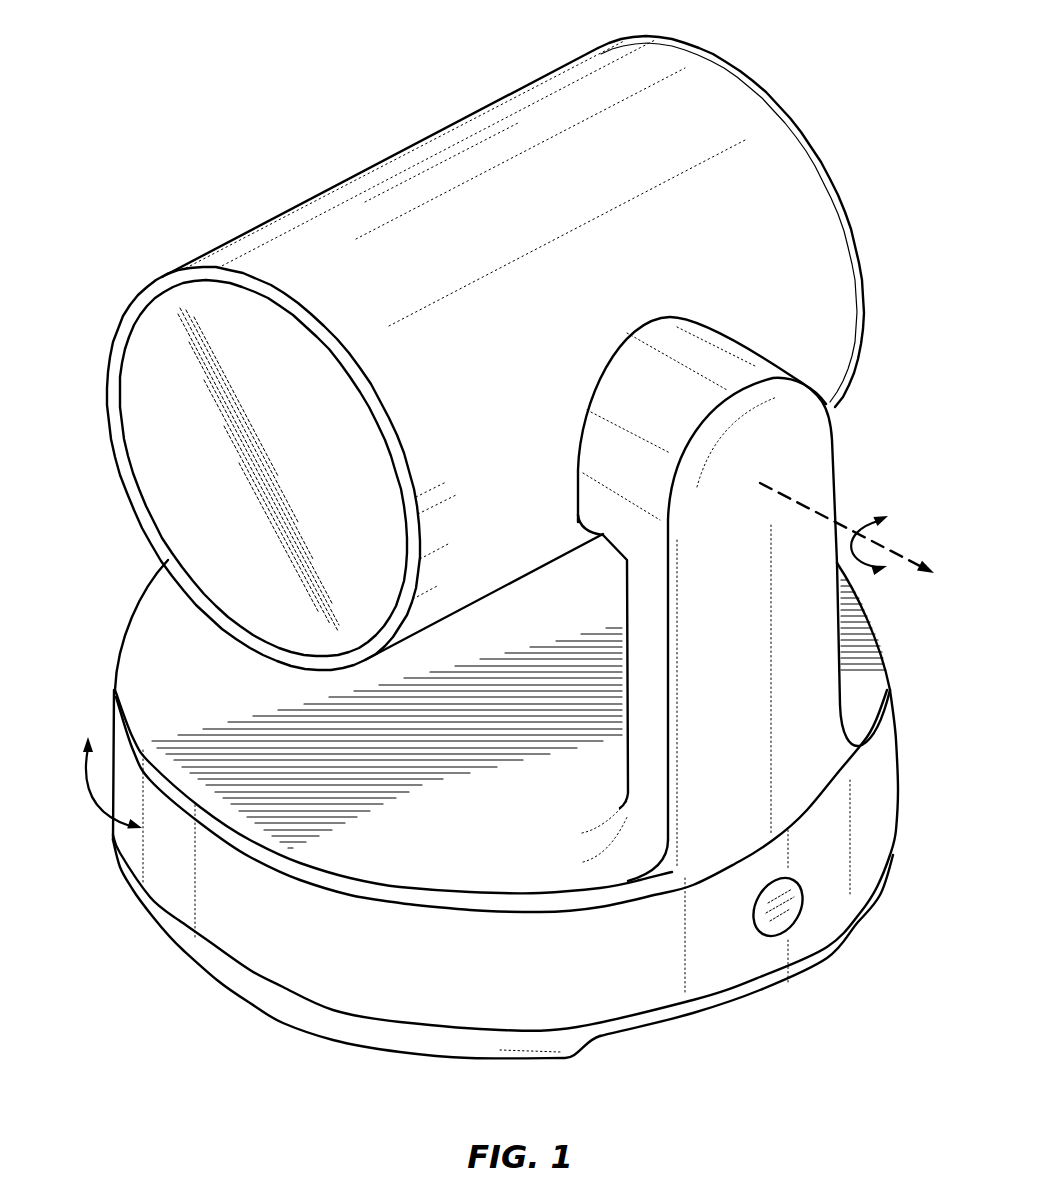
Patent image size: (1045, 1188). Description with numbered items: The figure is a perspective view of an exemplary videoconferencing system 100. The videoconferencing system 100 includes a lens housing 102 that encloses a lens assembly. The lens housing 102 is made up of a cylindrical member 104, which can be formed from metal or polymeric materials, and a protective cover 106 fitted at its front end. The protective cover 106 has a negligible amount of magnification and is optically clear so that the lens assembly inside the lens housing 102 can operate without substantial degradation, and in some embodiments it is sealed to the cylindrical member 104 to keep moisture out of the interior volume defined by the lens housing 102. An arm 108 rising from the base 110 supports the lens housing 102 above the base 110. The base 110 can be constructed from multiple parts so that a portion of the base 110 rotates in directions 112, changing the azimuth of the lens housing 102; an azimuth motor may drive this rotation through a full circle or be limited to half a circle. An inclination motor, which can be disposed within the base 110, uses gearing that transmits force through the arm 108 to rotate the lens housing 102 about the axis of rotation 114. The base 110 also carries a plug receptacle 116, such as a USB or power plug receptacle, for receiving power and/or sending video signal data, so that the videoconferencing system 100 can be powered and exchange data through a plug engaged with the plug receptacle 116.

The videoconferencing system 100 is at (172, 76).
The lens housing 102 is at (442, 86).
The cylindrical member 104 is at (574, 307).
The protective cover 106 is at (293, 427).
The arm 108 is at (704, 632).
The base 110 is at (371, 971).
The directions 112 is at (89, 776).
The axis of rotation 114 is at (847, 529).
The plug receptacle 116 is at (790, 930).